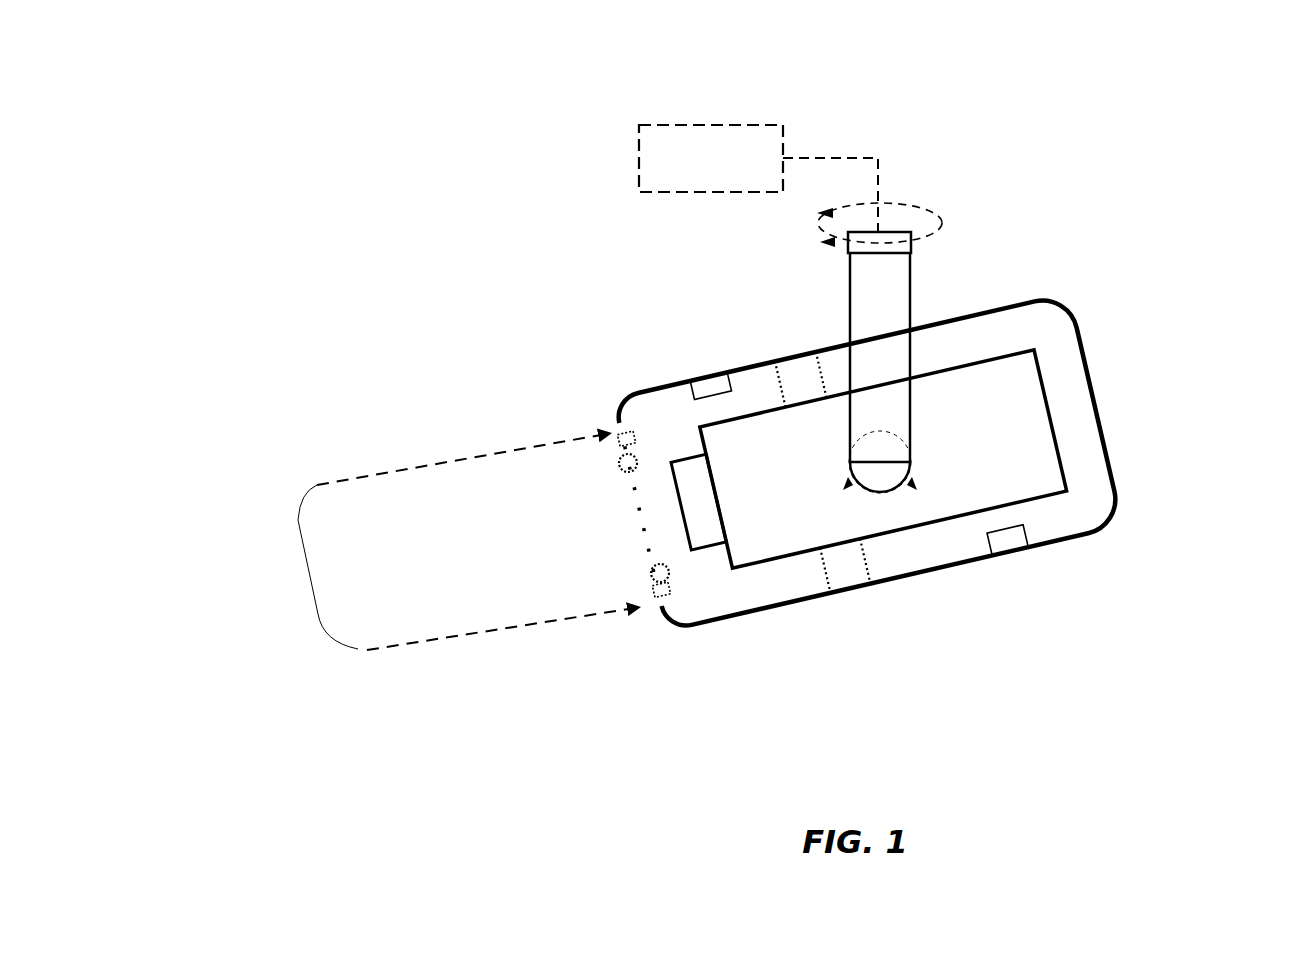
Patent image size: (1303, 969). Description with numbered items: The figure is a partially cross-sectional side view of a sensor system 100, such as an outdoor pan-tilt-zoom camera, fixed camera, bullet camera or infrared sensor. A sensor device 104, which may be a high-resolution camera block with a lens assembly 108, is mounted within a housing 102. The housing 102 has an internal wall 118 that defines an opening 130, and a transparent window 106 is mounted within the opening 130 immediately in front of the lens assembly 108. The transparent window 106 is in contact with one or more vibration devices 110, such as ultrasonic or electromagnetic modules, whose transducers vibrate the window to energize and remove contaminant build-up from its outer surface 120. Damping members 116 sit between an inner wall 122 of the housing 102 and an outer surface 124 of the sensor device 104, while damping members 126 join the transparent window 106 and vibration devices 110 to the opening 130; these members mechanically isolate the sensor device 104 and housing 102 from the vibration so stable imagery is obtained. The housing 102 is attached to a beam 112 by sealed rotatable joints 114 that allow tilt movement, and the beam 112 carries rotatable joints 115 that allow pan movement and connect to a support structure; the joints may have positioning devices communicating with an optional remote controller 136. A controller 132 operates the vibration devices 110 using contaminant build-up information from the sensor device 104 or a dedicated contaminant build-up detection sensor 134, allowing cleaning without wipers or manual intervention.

The sensor system 100 is at (312, 122).
The housing 102 is at (1042, 300).
The sensor device 104 is at (992, 433).
The transparent window 106 is at (648, 534).
The lens assembly 108 is at (690, 453).
The vibration devices 110 is at (620, 470).
The beam 112 is at (890, 312).
The sealed rotatable joints 114 is at (890, 482).
The rotatable joints 115 is at (897, 240).
The damping members 116 is at (797, 380).
The internal wall 118 is at (685, 607).
The outer surface 120 is at (630, 504).
The inner wall 122 is at (939, 332).
The outer surface 124 is at (766, 398).
The damping members 126 is at (619, 444).
The opening 130 is at (310, 581).
The controller 132 is at (1010, 540).
The contaminant build-up detection sensor 134 is at (717, 390).
The remote controller 136 is at (741, 124).